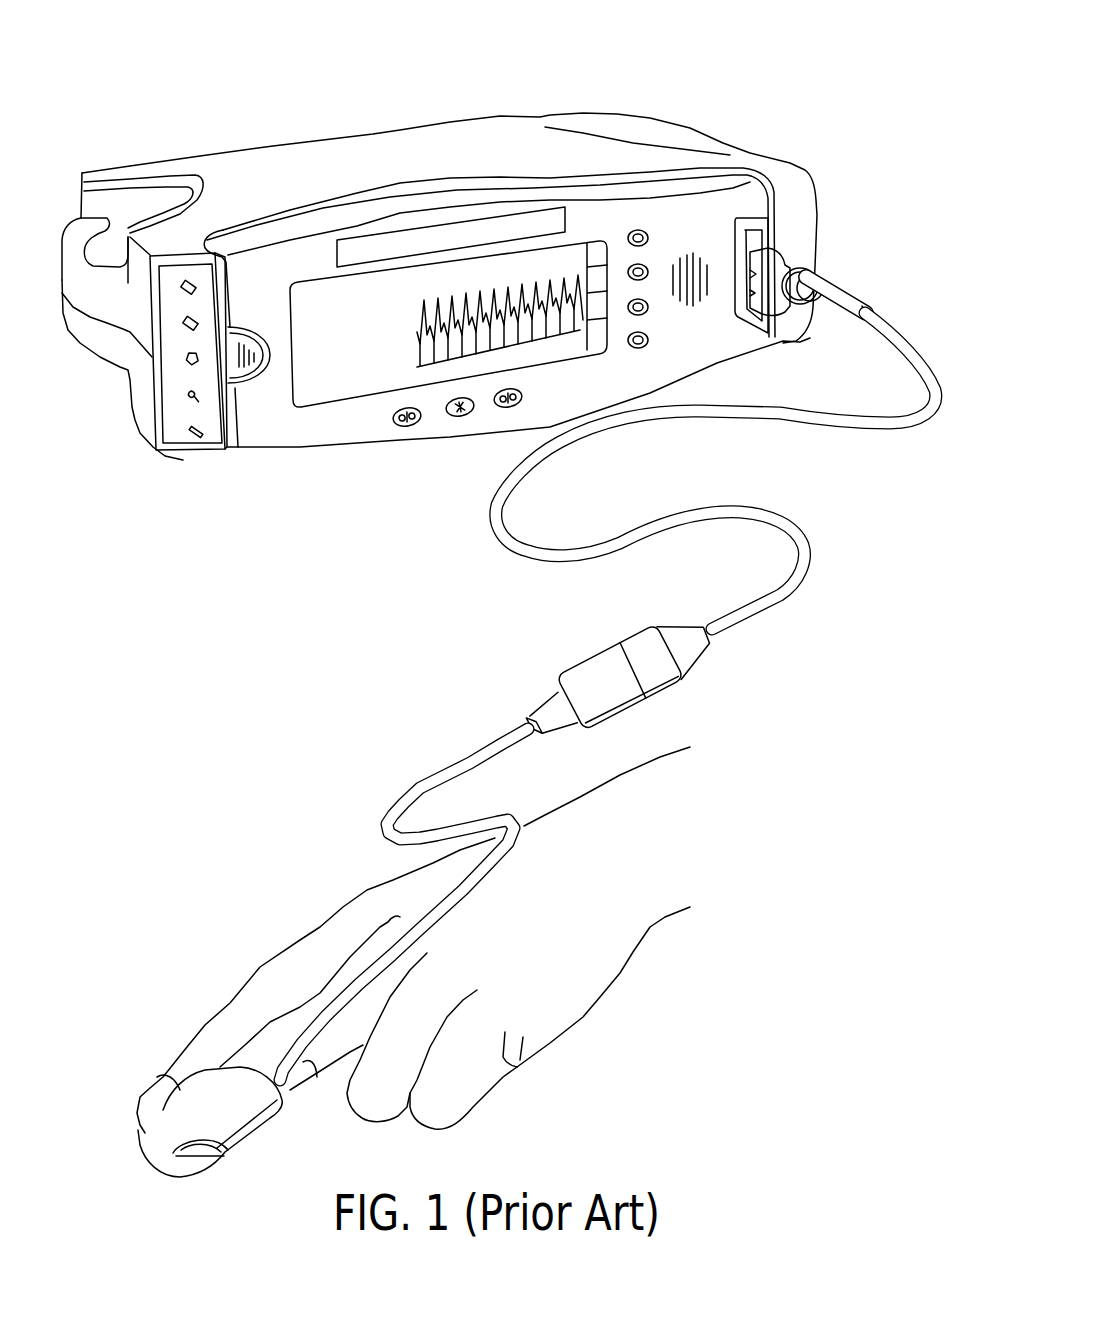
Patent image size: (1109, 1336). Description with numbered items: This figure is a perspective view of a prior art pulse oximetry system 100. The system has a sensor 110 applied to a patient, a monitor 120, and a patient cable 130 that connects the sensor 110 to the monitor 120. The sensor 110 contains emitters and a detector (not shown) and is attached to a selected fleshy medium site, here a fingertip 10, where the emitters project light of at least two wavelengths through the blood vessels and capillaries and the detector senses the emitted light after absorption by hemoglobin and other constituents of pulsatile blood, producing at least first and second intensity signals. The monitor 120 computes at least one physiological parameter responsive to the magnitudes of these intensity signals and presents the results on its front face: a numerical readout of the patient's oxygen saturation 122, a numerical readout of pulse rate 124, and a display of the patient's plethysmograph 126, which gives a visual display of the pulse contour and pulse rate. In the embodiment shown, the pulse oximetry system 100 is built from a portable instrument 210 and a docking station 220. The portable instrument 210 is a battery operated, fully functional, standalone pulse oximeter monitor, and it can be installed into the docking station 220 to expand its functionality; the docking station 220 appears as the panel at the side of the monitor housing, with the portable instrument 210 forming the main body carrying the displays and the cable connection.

The pulse oximetry system 100 is at (462, 54).
The monitor 120 is at (355, 132).
The portable instrument 210 is at (260, 447).
The docking station 220 is at (190, 453).
The oxygen saturation readout 122 is at (327, 288).
The pulse rate readout 124 is at (330, 392).
The plethysmograph display 126 is at (560, 273).
The patient cable 130 is at (803, 542).
The sensor 110 is at (162, 1172).
The fingertip 10 is at (200, 1157).